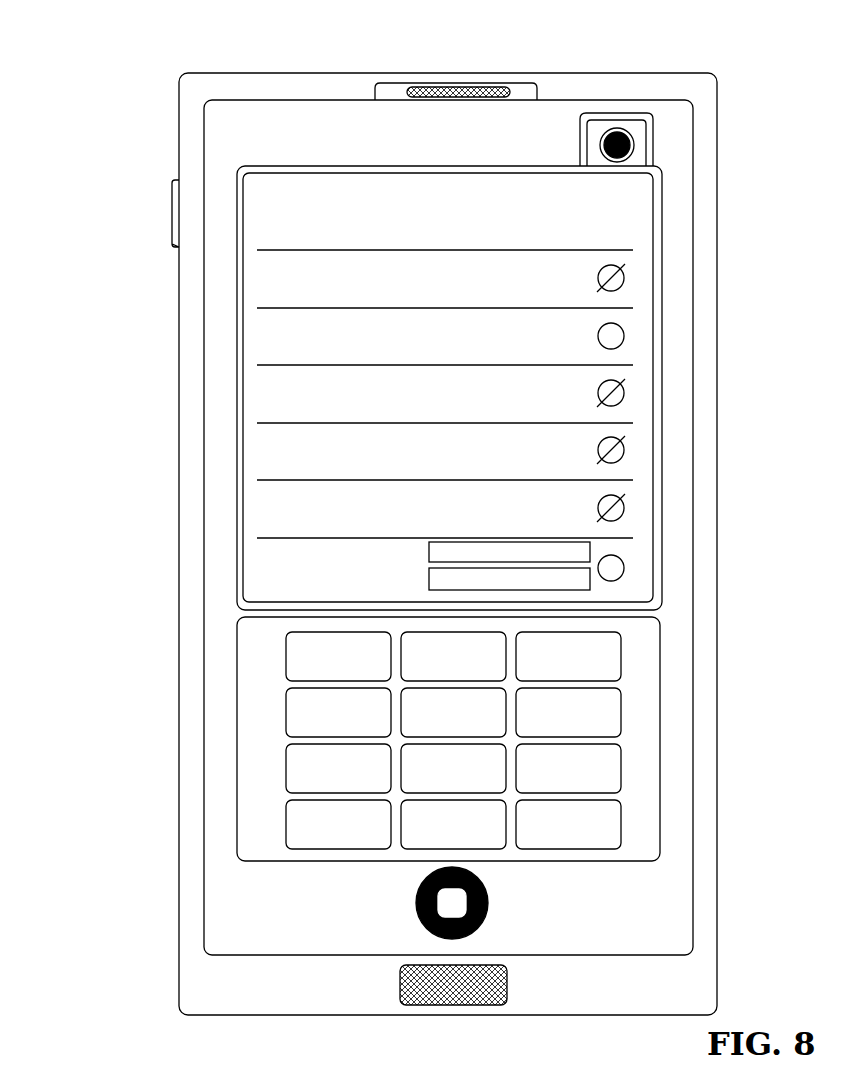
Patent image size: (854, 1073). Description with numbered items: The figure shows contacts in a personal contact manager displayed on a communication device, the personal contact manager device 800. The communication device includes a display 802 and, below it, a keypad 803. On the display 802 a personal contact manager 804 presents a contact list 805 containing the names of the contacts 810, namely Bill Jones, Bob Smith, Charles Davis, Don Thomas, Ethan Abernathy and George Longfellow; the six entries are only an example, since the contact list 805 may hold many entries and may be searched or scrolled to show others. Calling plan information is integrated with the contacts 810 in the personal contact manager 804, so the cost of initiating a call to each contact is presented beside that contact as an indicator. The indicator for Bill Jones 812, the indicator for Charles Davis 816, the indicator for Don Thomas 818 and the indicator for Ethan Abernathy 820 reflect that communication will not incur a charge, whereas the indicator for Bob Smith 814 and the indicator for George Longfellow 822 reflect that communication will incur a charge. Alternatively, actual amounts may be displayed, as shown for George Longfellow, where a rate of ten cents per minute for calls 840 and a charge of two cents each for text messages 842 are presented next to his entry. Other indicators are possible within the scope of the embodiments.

The personal contact manager device 800 is at (773, 78).
The display 802 is at (237, 198).
The keypad 803 is at (253, 673).
The personal contact manager 804 is at (478, 172).
The contact list 805 is at (422, 242).
The contacts 810 is at (253, 566).
The indicator associated with Bill Jones 812 is at (624, 281).
The indicator associated with Bob Smith 814 is at (624, 339).
The indicator associated with Charles Davis 816 is at (624, 396).
The indicator associated with Don Thomas 818 is at (624, 453).
The indicator associated with Ethan Abernathy 820 is at (624, 511).
The indicator associated with George Longfellow 822 is at (624, 571).
The cost for calls 840 is at (590, 563).
The text charges 842 is at (590, 591).